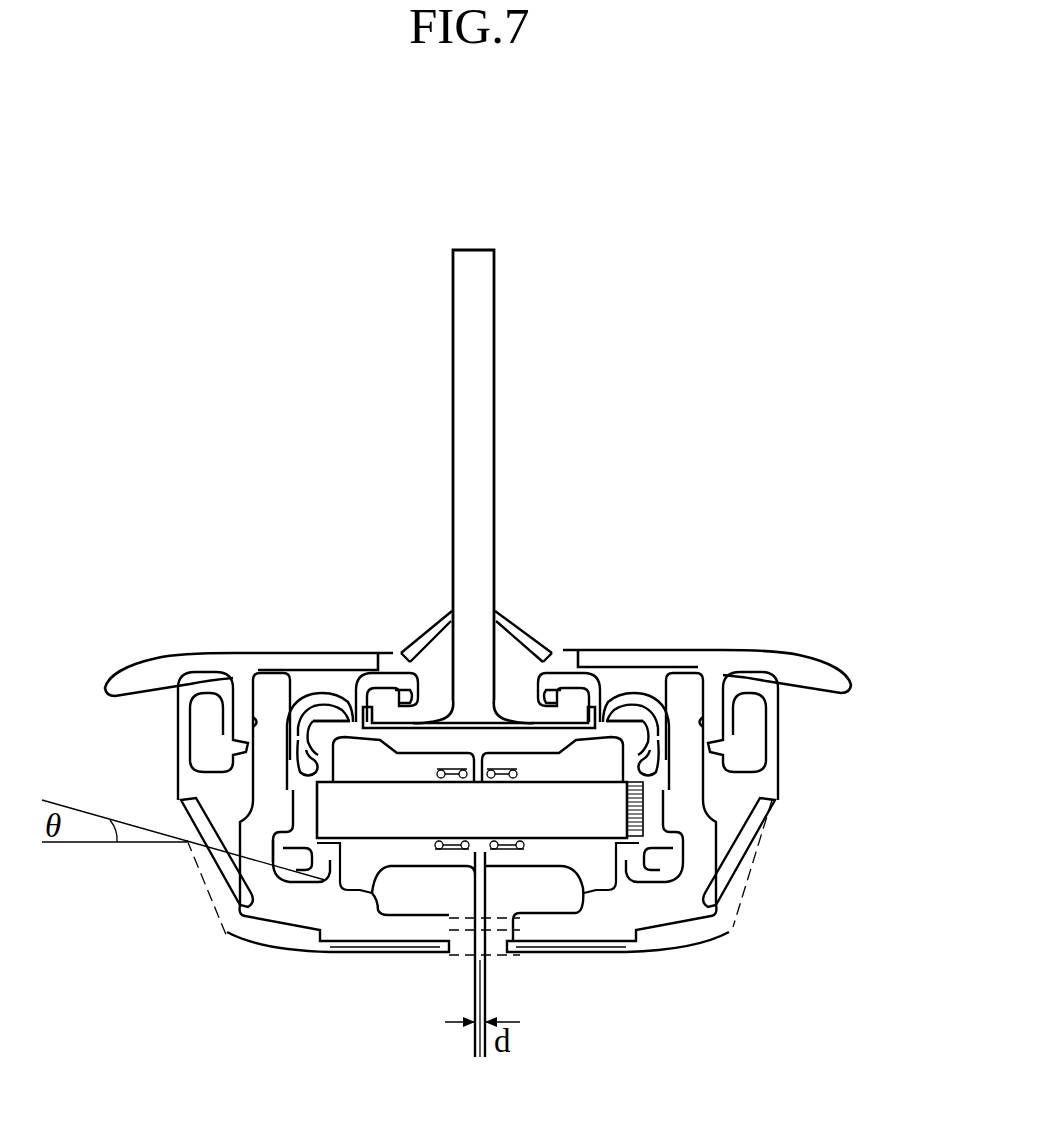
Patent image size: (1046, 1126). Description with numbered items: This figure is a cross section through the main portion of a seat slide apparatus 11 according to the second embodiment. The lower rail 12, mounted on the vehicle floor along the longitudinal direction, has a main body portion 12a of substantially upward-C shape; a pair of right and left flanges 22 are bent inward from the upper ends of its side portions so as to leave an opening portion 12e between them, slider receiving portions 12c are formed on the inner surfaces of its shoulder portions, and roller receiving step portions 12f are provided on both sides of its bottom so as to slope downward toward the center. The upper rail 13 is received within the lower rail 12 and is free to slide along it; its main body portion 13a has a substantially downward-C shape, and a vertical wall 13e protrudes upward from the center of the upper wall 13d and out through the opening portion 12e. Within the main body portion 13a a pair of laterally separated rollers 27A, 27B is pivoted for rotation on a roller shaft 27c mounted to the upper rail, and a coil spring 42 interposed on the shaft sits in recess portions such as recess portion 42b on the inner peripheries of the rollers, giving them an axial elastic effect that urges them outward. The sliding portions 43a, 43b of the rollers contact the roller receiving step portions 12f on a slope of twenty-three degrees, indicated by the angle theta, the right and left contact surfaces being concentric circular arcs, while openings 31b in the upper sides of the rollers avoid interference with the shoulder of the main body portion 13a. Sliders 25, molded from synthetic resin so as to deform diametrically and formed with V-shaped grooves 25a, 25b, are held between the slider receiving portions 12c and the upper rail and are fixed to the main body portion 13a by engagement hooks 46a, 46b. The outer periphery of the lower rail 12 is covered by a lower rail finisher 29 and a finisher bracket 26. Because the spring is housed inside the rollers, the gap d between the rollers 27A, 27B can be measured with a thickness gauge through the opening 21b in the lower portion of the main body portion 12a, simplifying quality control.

The seat slide apparatus 11 is at (227, 973).
The lower rail 12 is at (683, 913).
The main body portion 12a is at (263, 798).
The slider receiving portions 12c is at (303, 710).
The opening portion 12e is at (530, 655).
The roller receiving step portions 12f is at (338, 890).
The upper rail 13 is at (452, 363).
The main body portion 13a is at (690, 793).
The upper wall 13d is at (403, 647).
The vertical wall 13e is at (497, 338).
The opening 21b is at (498, 950).
The flanges 22 is at (360, 700).
The sliders 25 is at (280, 770).
The V-shaped groove 25a is at (320, 715).
The V-shaped groove 25b is at (636, 712).
The finisher bracket 26 is at (780, 743).
The roller 27A is at (388, 822).
The roller 27B is at (565, 860).
The roller shaft 27c is at (412, 862).
The lower rail finisher 29 is at (843, 681).
The opening 31b is at (357, 733).
The coil spring 42 is at (442, 850).
The recess portion 42b is at (513, 787).
The sliding portion 43a is at (250, 878).
The sliding portion 43b is at (600, 886).
The engagement hook 46a is at (305, 770).
The engagement hook 46b is at (655, 787).